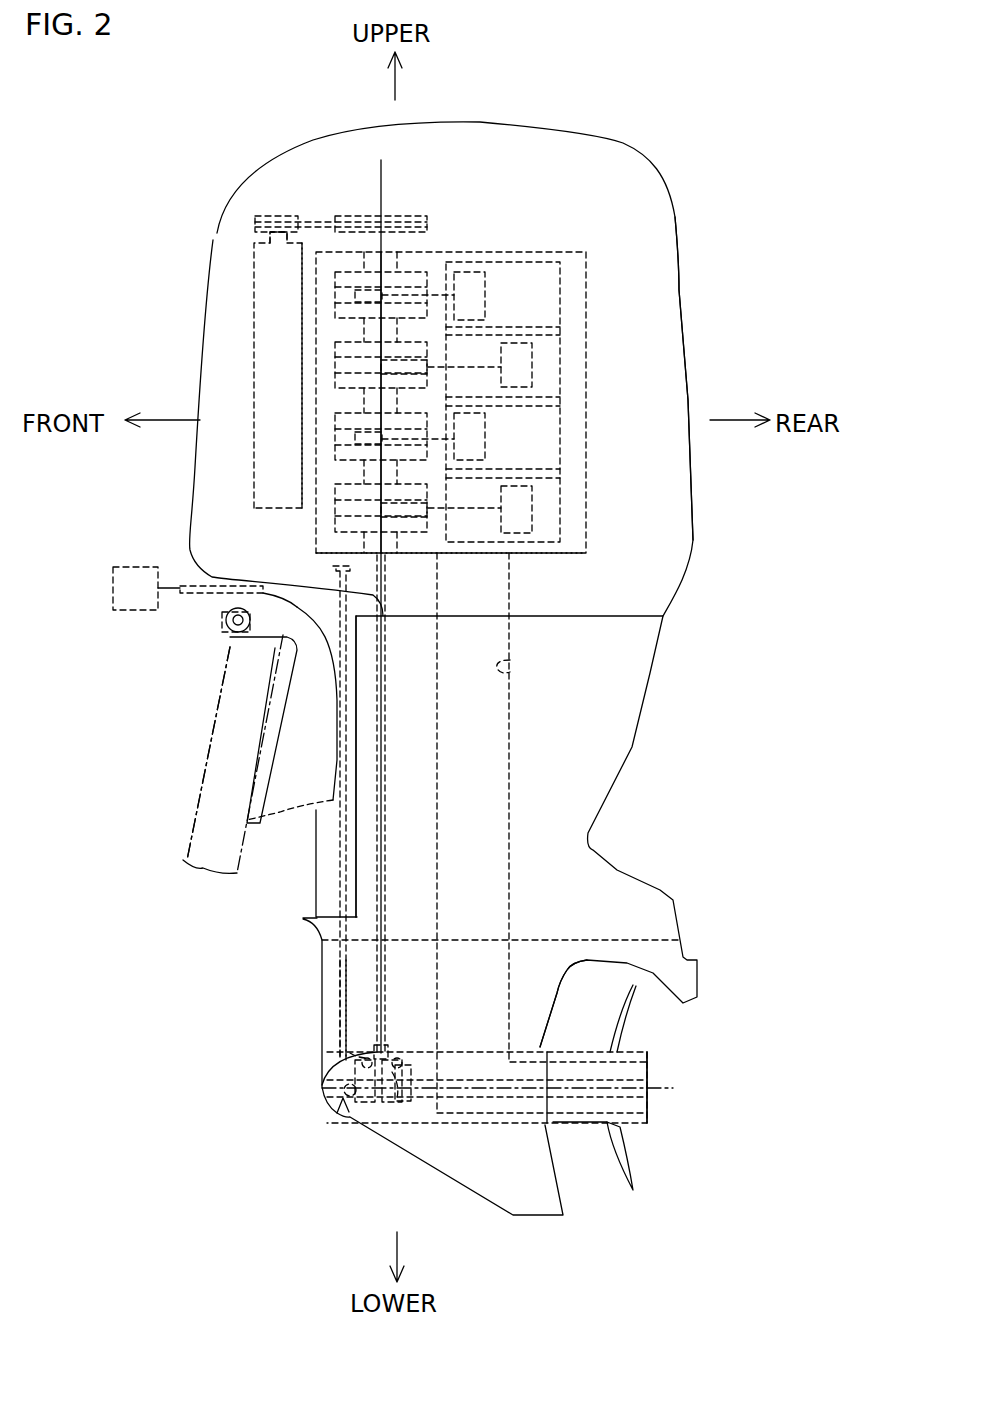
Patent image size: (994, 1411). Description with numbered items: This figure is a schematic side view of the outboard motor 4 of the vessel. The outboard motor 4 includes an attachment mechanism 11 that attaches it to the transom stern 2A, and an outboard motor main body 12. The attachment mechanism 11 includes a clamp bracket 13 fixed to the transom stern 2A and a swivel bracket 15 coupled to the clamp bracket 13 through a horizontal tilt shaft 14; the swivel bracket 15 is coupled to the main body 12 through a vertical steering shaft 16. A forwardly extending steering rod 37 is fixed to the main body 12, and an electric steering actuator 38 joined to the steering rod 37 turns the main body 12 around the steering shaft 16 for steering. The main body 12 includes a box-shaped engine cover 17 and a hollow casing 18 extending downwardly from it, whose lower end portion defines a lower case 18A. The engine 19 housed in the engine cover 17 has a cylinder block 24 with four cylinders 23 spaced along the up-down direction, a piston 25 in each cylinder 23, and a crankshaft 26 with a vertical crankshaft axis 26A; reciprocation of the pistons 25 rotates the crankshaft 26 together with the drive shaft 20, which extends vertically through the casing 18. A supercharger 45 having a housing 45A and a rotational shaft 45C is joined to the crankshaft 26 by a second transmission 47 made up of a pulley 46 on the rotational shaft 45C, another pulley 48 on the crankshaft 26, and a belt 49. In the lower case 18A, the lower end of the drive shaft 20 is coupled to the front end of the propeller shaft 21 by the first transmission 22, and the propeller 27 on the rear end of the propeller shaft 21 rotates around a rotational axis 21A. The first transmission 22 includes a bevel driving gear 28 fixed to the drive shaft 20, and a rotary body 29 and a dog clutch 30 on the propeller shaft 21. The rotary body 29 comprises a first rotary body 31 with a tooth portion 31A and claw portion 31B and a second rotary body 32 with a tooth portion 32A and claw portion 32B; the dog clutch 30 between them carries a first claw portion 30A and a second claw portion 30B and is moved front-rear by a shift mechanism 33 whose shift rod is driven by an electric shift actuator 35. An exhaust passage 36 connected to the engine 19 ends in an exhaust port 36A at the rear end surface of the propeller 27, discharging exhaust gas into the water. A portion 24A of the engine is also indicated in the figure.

The outboard motor 4 is at (636, 110).
The outboard motor main body 12 is at (192, 371).
The engine cover 17 is at (680, 250).
The cylinder block 24 is at (503, 250).
The cylinders 23 is at (560, 353).
The piston 25 is at (487, 442).
The engine 19 is at (564, 240).
The crankshaft axis 26A is at (385, 170).
The crankshaft 26 is at (335, 282).
The engine bottom 24A is at (487, 555).
The second transmission 47 is at (360, 95).
The pulley 46 is at (272, 215).
The pulley 48 is at (365, 215).
The belt 49 is at (315, 215).
The supercharger 45 is at (252, 462).
The rotational shaft 45C is at (253, 237).
The housing 45A is at (340, 275).
The electric steering actuator 38 is at (122, 590).
The steering rod 37 is at (183, 585).
The clamp bracket 13 is at (305, 732).
The tilt shaft 14 is at (222, 622).
The steering shaft 16 is at (325, 825).
The transom stern 2A is at (202, 810).
The attachment mechanism 11 is at (260, 877).
The electric shift actuator 35 is at (333, 568).
The drive shaft 20 is at (390, 727).
The casing 18 is at (633, 748).
The exhaust passage 36 is at (510, 668).
The swivel bracket 15 is at (323, 878).
The lower case 18A is at (322, 1002).
The shift mechanism 33 is at (340, 980).
The propeller shaft 21 is at (497, 1093).
The rotational axis 21A is at (673, 1087).
The propeller 27 is at (607, 1170).
The tooth portion 32A is at (380, 1050).
The second claw portion 30B is at (370, 1090).
The exhaust port 36A is at (650, 1068).
The driving gear 28 is at (393, 1047).
The rotary body 29 is at (400, 1212).
The first rotary body 31 is at (363, 1117).
The second rotary body 32 is at (385, 1110).
The claw portion 31B is at (367, 1047).
The tooth portion 31A is at (370, 1058).
The first claw portion 30A is at (347, 1093).
The first transmission 22 is at (337, 1110).
The dog clutch 30 is at (350, 1107).
The claw portion 32B is at (410, 1113).